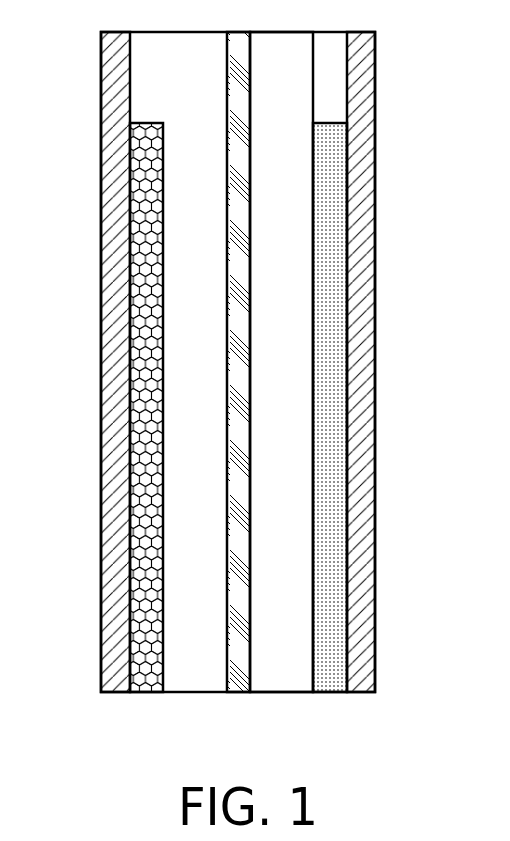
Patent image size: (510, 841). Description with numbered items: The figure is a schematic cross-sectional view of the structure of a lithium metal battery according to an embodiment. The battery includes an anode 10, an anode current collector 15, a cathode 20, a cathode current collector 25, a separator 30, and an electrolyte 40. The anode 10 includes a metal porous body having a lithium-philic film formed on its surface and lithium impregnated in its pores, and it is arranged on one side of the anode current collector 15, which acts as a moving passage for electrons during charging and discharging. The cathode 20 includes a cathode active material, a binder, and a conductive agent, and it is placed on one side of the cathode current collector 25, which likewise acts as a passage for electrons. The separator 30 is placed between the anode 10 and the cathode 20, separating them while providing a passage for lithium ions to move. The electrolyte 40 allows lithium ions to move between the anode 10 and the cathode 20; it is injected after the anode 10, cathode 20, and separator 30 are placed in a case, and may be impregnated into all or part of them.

The anode 10 is at (140, 256).
The anode current collector 15 is at (112, 205).
The cathode 20 is at (335, 378).
The cathode current collector 25 is at (363, 317).
The separator 30 is at (237, 303).
The electrolyte 40 is at (298, 441).